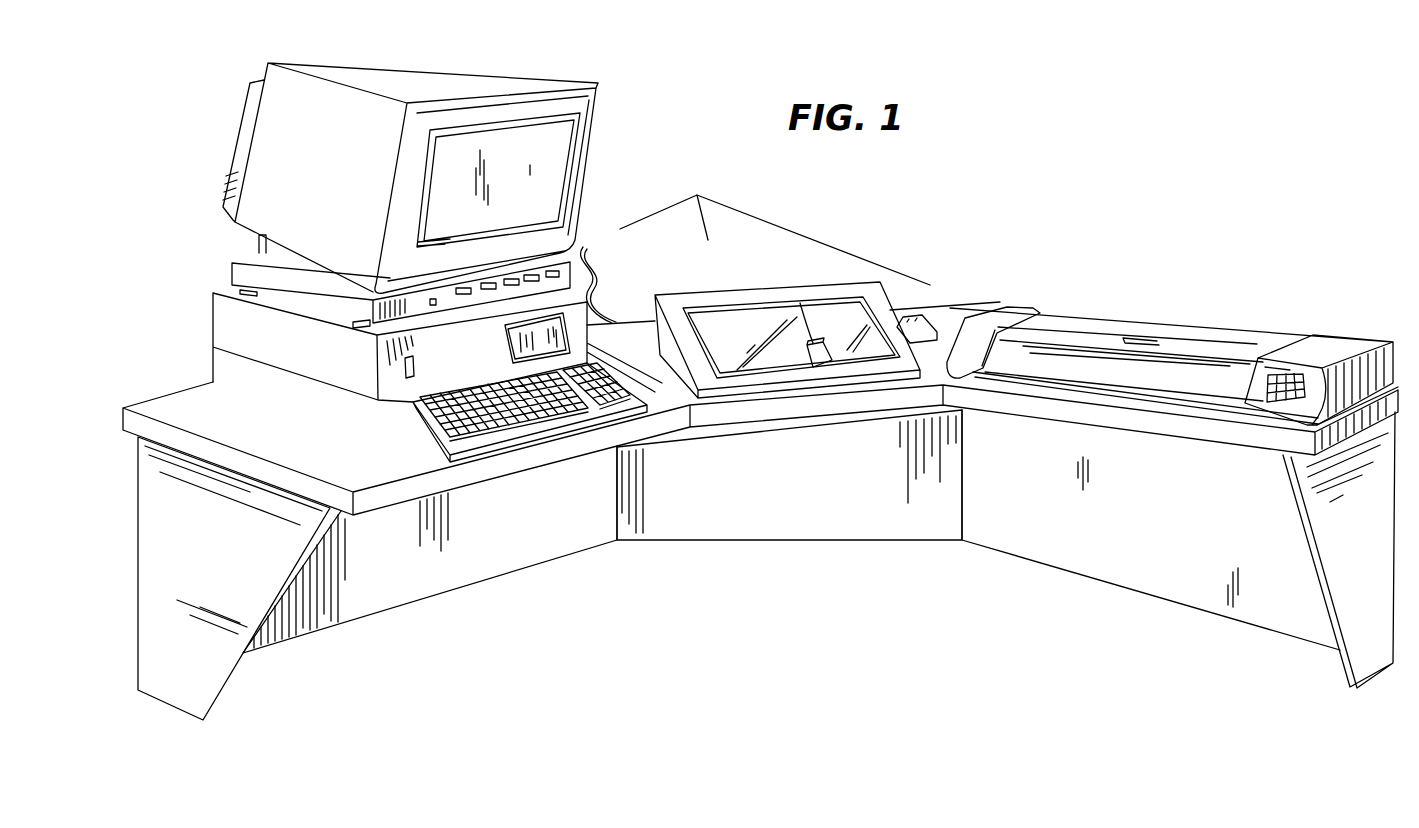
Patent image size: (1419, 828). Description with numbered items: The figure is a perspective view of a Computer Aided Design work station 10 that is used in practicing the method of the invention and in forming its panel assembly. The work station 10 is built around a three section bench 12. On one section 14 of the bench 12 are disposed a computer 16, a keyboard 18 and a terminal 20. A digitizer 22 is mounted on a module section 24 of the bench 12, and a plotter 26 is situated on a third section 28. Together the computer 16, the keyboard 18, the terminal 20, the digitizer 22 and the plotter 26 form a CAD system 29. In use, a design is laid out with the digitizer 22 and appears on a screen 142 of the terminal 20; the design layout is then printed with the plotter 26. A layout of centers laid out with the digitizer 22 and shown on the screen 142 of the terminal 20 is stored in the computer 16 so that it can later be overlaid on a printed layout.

The Computer Aided Design work station 10 is at (739, 544).
The three section bench 12 is at (133, 602).
The section 14 is at (470, 568).
The computer 16 is at (225, 322).
The keyboard 18 is at (435, 430).
The terminal 20 is at (434, 193).
The digitizer 22 is at (763, 293).
The module section 24 is at (812, 530).
The plotter 26 is at (1237, 345).
The third section 28 is at (1113, 557).
The CAD system 29 is at (937, 288).
The screen 142 is at (466, 208).